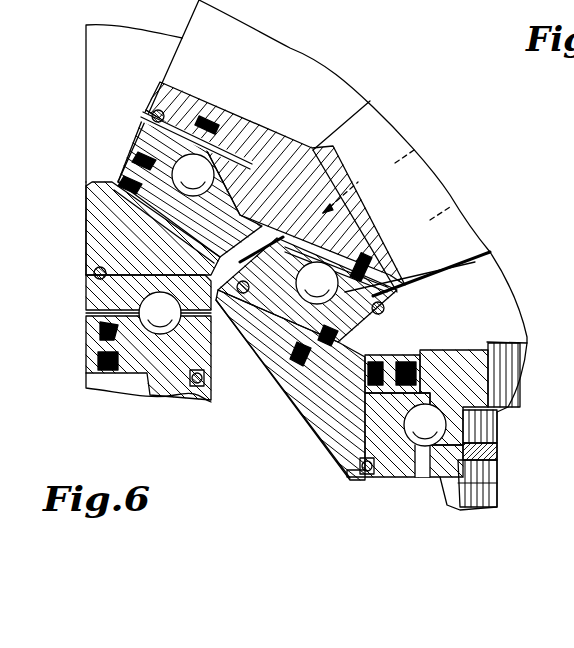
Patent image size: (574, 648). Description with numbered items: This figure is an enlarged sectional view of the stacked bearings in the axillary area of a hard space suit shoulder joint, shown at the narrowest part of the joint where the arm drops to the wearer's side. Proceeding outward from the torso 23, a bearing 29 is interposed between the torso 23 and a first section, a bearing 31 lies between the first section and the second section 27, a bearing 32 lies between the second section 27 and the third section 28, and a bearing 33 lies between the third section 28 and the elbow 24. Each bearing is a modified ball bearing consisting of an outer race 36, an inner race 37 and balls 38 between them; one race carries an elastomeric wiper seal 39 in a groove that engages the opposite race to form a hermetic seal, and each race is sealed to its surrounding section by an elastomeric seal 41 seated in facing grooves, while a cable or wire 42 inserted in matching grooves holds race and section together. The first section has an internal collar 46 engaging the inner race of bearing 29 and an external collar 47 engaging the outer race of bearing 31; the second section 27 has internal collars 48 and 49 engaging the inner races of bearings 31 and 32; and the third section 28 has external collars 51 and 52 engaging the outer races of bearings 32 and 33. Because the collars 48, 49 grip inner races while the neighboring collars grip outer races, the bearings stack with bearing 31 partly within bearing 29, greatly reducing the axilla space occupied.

The torso 23 is at (97, 380).
The elbow 24 is at (458, 512).
The second section 27 is at (296, 62).
The third section 28 is at (500, 283).
The bearing 29 is at (128, 305).
The bearing 31 is at (270, 137).
The bearing 32 is at (387, 292).
The bearing 33 is at (450, 427).
The outer race 36 is at (230, 205).
The inner race 37 is at (150, 132).
The balls 38 is at (232, 168).
The elastomeric wiper seal 39 is at (133, 157).
The elastomeric seal 41 is at (205, 105).
The cable or wire 42 is at (151, 110).
The internal collar 46 is at (105, 65).
The external collar 47 is at (97, 218).
The internal collar 48 is at (231, 111).
The internal collar 49 is at (370, 180).
The external collar 51 is at (455, 200).
The external collar 52 is at (322, 402).